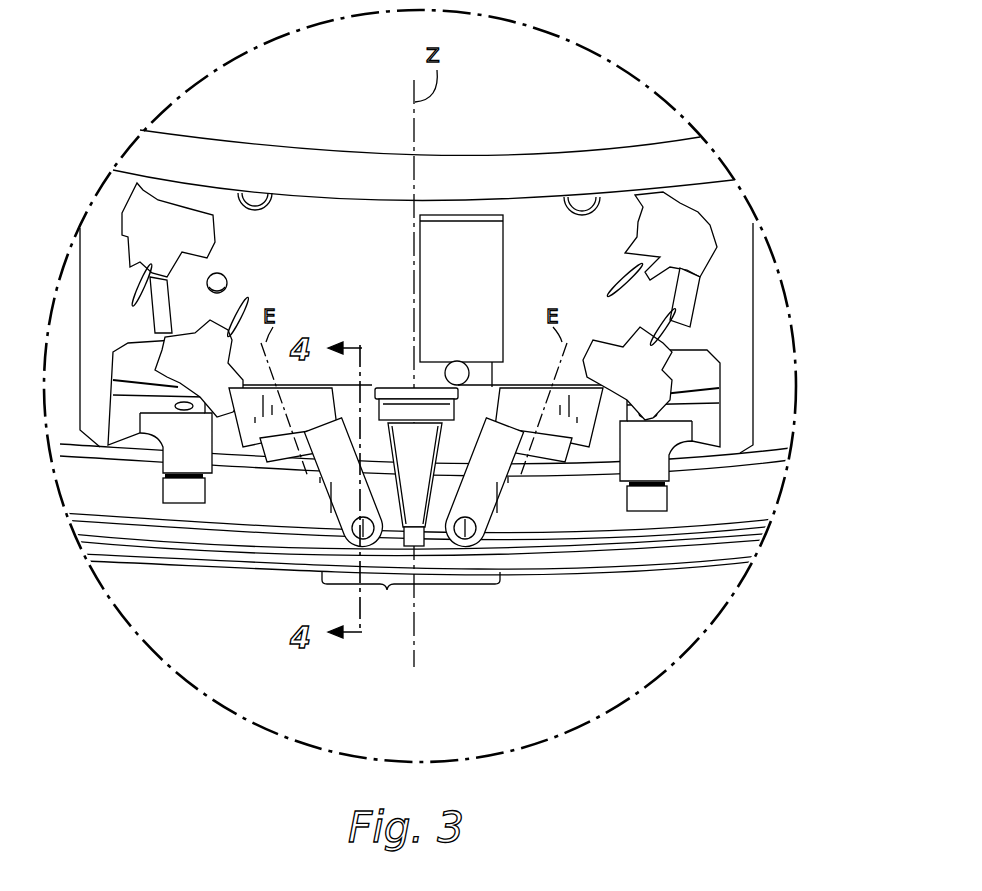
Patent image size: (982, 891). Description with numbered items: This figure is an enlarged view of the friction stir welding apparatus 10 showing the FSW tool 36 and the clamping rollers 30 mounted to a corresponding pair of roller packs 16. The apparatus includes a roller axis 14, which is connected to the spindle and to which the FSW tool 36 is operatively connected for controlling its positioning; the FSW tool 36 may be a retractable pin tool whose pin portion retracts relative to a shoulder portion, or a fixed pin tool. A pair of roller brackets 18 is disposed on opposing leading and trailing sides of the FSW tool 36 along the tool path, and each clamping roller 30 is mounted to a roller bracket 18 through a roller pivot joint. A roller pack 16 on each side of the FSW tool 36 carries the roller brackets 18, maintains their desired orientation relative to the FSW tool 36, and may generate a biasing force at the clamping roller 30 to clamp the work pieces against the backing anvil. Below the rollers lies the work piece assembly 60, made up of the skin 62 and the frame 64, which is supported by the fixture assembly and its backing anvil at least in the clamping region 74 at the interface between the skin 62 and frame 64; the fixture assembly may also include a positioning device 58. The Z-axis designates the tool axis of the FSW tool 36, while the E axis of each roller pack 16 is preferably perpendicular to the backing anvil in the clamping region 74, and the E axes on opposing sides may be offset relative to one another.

The friction stir welding apparatus 10 is at (163, 50).
The roller axis 14 is at (145, 153).
The positioning device 58 is at (755, 277).
The work piece assembly 60 is at (95, 493).
The frame 64 is at (755, 493).
The skin 62 is at (763, 533).
The FSW tool 36 is at (420, 548).
The roller pack 16 is at (243, 442).
The roller bracket 18 is at (288, 458).
The clamping roller 30 is at (325, 500).
The clamping region 74 is at (411, 597).